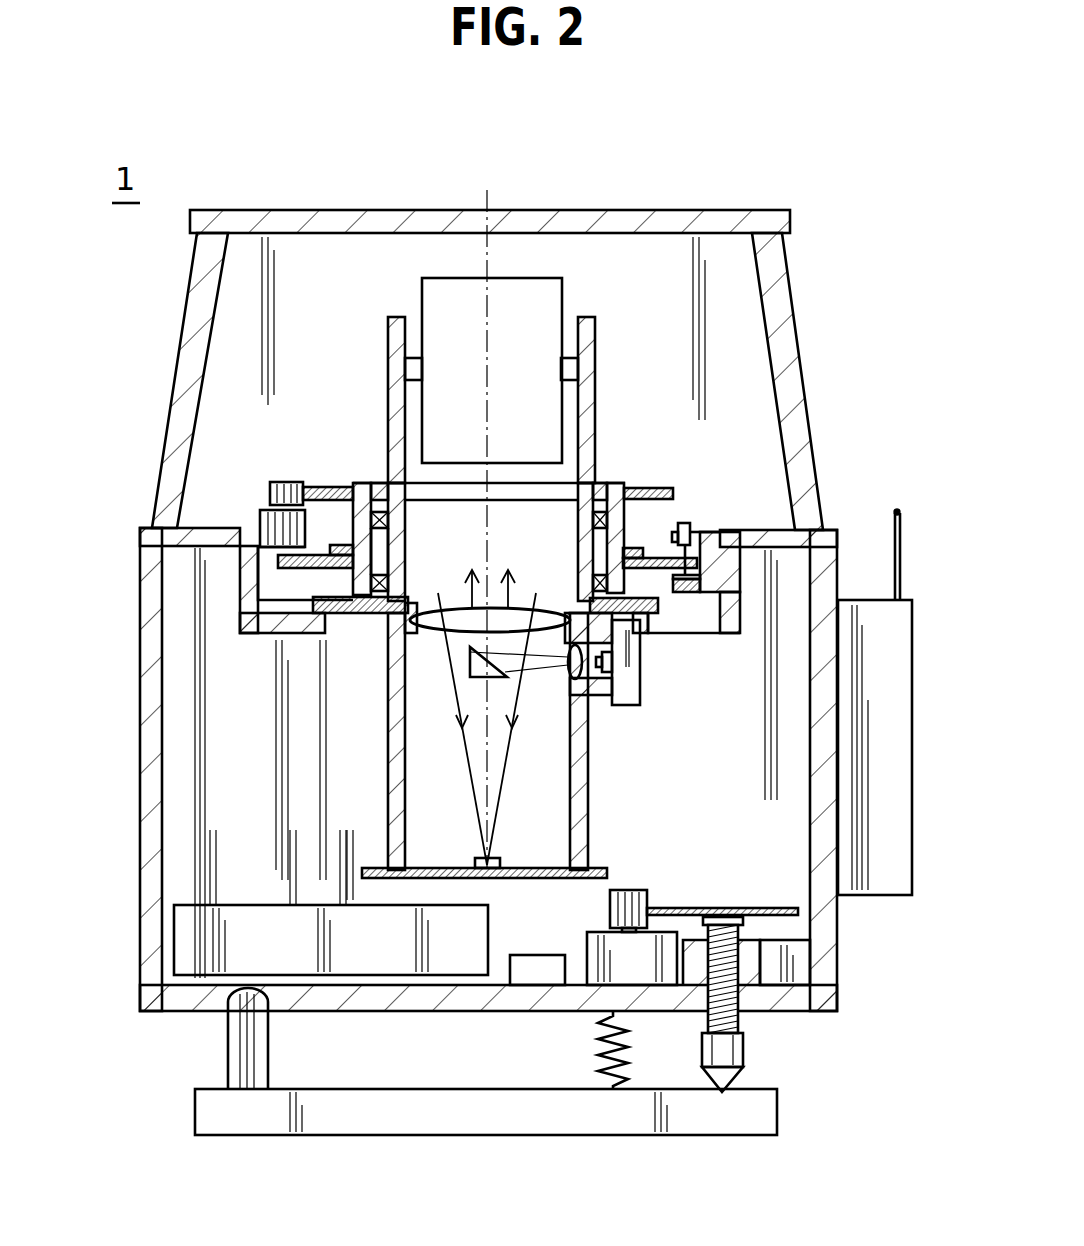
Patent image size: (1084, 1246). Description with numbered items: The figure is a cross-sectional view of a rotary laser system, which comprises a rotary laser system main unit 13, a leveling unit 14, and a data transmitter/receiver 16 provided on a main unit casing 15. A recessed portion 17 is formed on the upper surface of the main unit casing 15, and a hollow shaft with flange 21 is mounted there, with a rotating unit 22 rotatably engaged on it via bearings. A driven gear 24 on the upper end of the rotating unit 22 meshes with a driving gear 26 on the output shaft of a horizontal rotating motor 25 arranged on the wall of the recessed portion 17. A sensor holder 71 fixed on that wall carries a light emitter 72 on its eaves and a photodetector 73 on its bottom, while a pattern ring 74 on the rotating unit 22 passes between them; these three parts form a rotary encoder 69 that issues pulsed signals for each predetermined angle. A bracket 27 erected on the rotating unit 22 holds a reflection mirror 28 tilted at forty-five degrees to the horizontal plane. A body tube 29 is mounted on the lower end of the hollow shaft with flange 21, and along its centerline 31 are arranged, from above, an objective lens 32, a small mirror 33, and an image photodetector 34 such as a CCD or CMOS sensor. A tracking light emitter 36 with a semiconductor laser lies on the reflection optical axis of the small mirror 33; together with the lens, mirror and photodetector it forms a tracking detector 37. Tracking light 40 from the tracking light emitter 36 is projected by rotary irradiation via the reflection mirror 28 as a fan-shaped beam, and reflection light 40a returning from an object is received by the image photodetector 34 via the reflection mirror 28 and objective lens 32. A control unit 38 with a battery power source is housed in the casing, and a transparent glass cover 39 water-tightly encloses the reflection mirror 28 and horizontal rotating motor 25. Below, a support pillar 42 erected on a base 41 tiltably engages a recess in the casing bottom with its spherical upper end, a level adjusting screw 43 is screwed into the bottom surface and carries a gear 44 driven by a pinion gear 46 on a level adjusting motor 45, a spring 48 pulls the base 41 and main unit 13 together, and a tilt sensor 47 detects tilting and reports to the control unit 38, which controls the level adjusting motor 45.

The rotary laser system main unit 13 is at (138, 778).
The leveling unit 14 is at (793, 1065).
The main unit casing 15 is at (148, 596).
The data transmitter/receiver 16 is at (868, 600).
The recessed portion 17 is at (283, 583).
The hollow shaft with flange 21 is at (402, 532).
The rotating unit 22 is at (612, 493).
The driven gear 24 is at (330, 487).
The horizontal rotating motor 25 is at (262, 522).
The driving gear 26 is at (286, 482).
The bracket 27 is at (388, 318).
The reflection mirror 28 is at (522, 278).
The body tube 29 is at (590, 757).
The centerline 31 is at (490, 248).
The objective lens 32 is at (460, 608).
The small mirror 33 is at (468, 653).
The image photodetector 34 is at (505, 862).
The tracking light emitter 36 is at (640, 660).
The tracking detector 37 is at (438, 710).
The control unit 38 is at (174, 928).
The cover 39 is at (795, 320).
The tracking light 40 is at (507, 598).
The reflection light 40a is at (463, 758).
The base 41 is at (778, 1108).
The support pillar 42 is at (228, 1057).
The level adjusting screw 43 is at (743, 1023).
The gear 44 is at (782, 908).
The level adjusting motor 45 is at (663, 932).
The pinion gear 46 is at (647, 890).
The tilt sensor 47 is at (540, 955).
The spring 48 is at (598, 1052).
The rotary encoder 69 is at (700, 510).
The sensor holder 71 is at (698, 556).
The light emitter 72 is at (684, 520).
The photodetector 73 is at (701, 582).
The pattern ring 74 is at (710, 633).